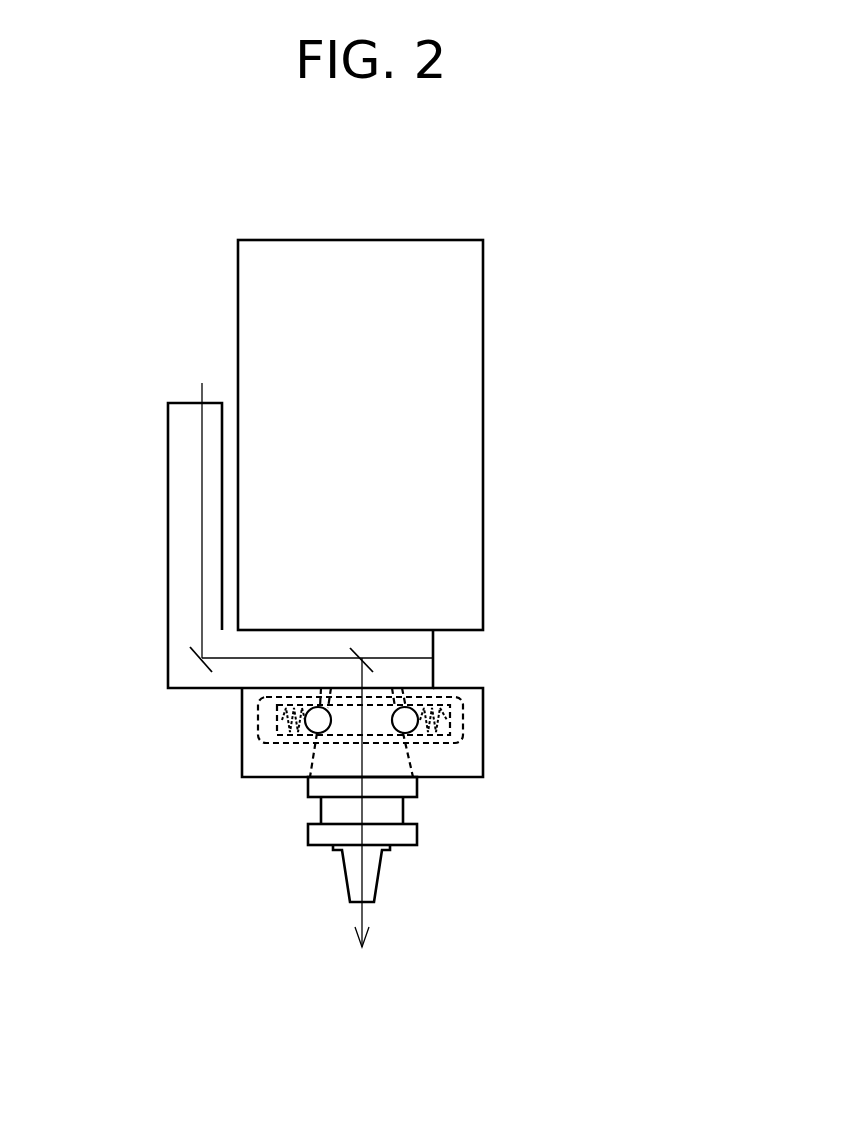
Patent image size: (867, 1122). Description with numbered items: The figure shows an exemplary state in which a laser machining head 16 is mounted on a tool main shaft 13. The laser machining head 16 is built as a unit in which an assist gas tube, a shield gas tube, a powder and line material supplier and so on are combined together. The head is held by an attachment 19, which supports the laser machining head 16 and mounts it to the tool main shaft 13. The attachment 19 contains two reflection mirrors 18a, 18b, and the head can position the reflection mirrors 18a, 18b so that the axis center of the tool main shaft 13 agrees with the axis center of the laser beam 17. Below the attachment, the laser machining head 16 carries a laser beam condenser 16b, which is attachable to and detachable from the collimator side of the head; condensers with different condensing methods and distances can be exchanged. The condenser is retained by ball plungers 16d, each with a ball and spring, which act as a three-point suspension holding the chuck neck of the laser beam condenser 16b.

The tool main shaft 13 is at (440, 323).
The laser machining head 16 is at (245, 733).
The laser beam condenser 16b is at (405, 834).
The ball plunger 16d is at (465, 742).
The laser beam 17 is at (202, 493).
The reflection mirror 18a is at (192, 647).
The reflection mirror 18b is at (370, 664).
The attachment 19 is at (383, 647).